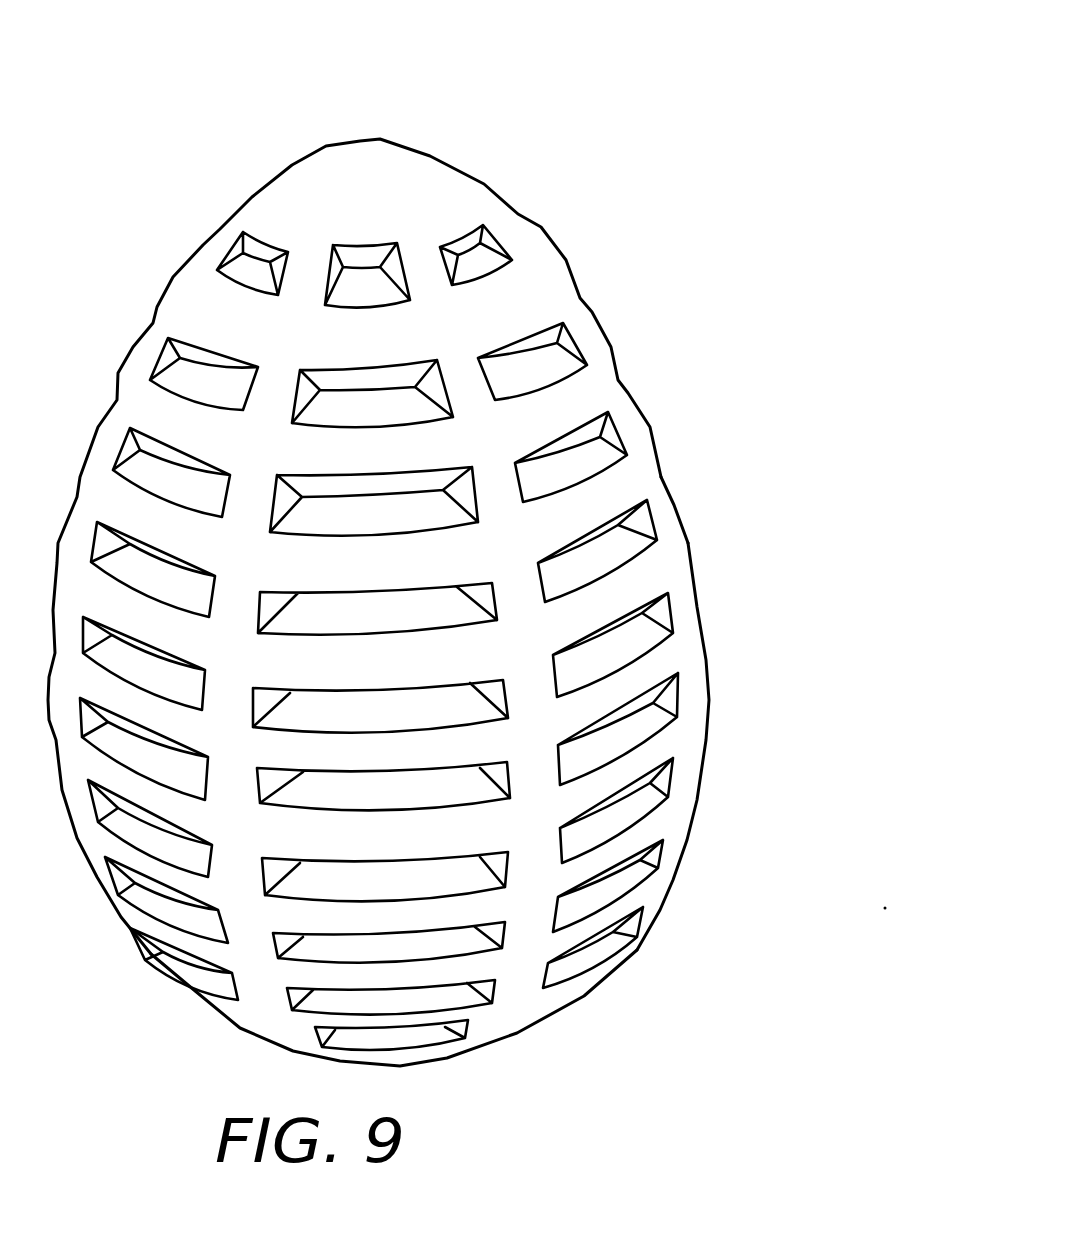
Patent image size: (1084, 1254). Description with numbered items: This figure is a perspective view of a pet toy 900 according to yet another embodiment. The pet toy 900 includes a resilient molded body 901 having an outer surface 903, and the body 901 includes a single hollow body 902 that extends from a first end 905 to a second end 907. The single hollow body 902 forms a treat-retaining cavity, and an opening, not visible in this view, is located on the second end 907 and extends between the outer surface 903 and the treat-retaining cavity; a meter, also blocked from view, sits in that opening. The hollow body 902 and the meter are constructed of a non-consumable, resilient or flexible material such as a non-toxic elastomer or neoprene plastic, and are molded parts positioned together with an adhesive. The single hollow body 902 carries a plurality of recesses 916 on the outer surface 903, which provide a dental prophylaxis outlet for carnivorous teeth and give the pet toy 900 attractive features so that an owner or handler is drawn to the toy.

The pet toy 900 is at (587, 155).
The resilient molded body 901 is at (692, 520).
The single hollow body 902 is at (700, 602).
The outer surface 903 is at (563, 405).
The first end 905 is at (360, 182).
The second end 907 is at (508, 1043).
The recesses 916 is at (625, 832).